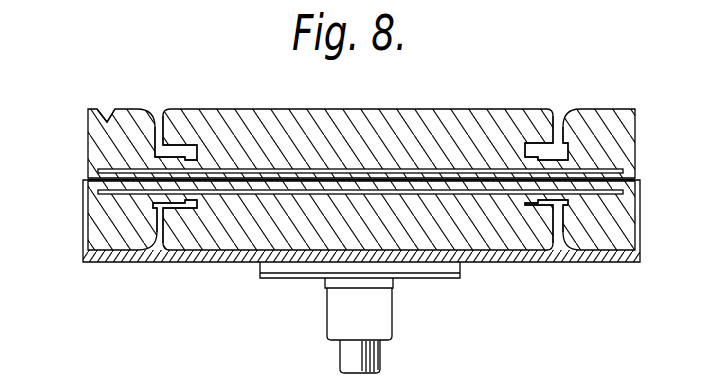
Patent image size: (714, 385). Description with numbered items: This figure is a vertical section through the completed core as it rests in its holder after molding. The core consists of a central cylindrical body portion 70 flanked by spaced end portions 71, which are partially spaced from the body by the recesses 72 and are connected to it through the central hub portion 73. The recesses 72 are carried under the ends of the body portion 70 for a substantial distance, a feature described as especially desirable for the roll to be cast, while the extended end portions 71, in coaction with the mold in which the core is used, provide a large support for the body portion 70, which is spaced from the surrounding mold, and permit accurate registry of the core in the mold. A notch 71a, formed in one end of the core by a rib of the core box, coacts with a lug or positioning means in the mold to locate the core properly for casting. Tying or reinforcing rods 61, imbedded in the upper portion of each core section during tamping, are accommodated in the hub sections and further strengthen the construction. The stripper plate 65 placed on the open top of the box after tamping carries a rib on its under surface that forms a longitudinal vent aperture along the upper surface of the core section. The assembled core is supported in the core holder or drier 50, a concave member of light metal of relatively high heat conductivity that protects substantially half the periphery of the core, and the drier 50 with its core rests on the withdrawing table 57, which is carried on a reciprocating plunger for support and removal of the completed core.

The central cylindrical body portion 70 is at (407, 117).
The end portions 71 is at (88, 139).
The notch 71a is at (109, 110).
The recesses 72 is at (155, 118).
The central hub portion 73 is at (557, 205).
The tying or reinforcing rods 61 is at (312, 191).
The core holder or drier 50 is at (116, 263).
The withdrawing table 57 is at (297, 272).
The stripper plate 65 is at (240, 183).